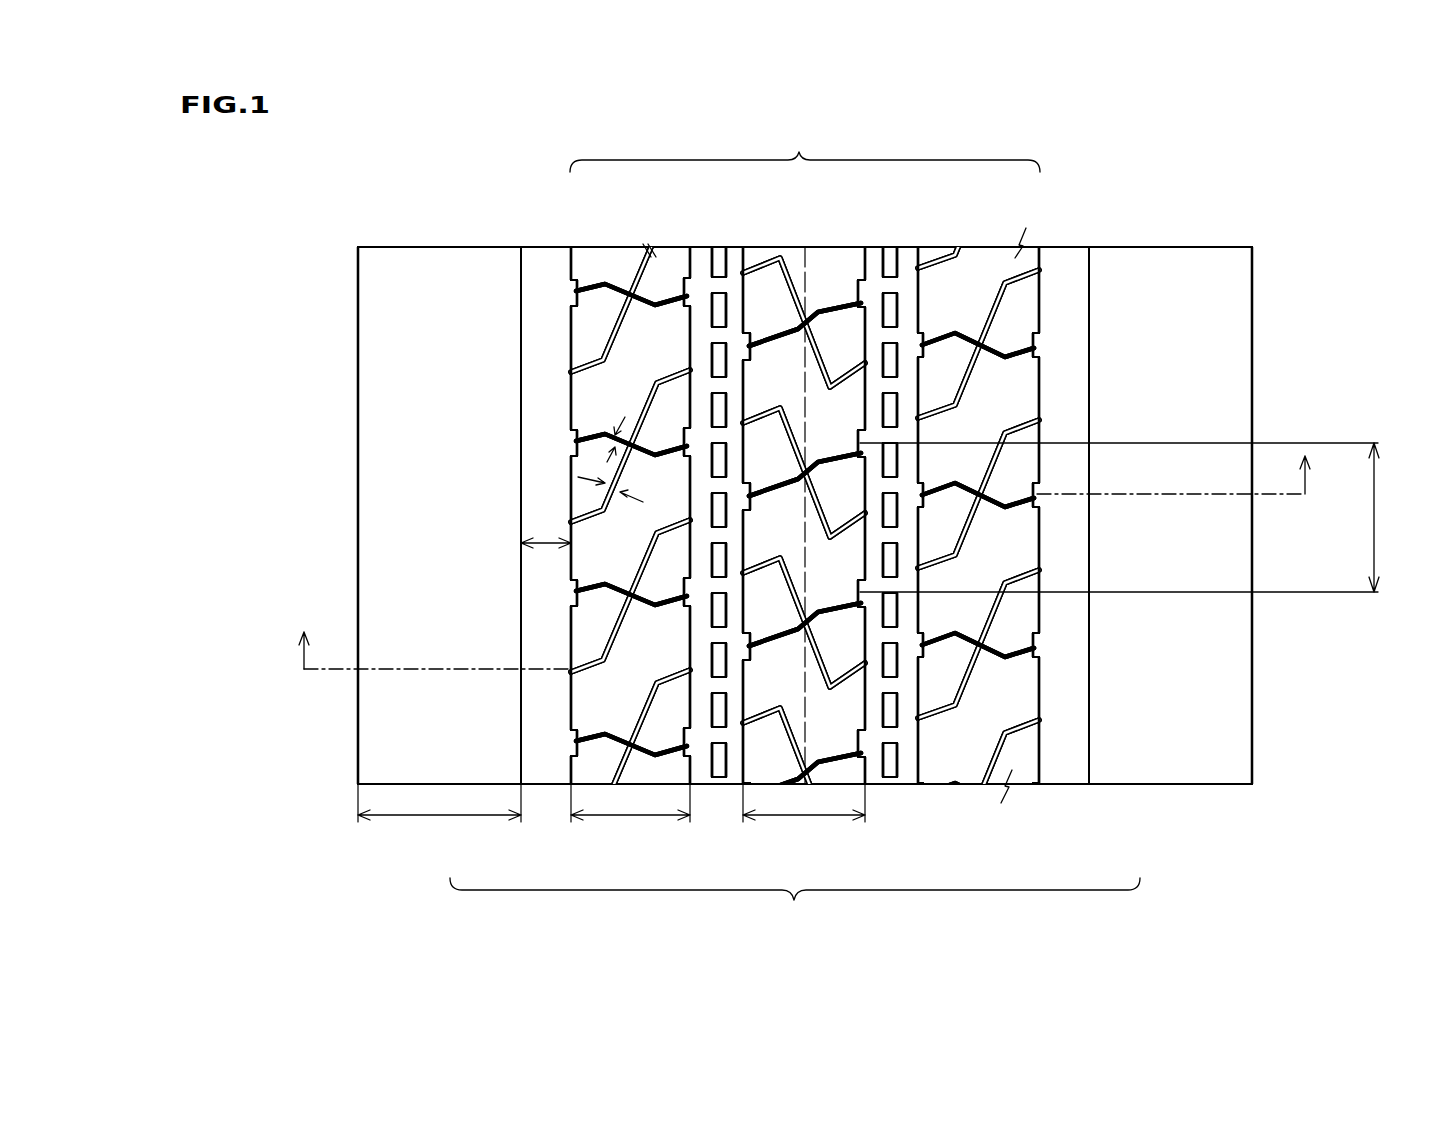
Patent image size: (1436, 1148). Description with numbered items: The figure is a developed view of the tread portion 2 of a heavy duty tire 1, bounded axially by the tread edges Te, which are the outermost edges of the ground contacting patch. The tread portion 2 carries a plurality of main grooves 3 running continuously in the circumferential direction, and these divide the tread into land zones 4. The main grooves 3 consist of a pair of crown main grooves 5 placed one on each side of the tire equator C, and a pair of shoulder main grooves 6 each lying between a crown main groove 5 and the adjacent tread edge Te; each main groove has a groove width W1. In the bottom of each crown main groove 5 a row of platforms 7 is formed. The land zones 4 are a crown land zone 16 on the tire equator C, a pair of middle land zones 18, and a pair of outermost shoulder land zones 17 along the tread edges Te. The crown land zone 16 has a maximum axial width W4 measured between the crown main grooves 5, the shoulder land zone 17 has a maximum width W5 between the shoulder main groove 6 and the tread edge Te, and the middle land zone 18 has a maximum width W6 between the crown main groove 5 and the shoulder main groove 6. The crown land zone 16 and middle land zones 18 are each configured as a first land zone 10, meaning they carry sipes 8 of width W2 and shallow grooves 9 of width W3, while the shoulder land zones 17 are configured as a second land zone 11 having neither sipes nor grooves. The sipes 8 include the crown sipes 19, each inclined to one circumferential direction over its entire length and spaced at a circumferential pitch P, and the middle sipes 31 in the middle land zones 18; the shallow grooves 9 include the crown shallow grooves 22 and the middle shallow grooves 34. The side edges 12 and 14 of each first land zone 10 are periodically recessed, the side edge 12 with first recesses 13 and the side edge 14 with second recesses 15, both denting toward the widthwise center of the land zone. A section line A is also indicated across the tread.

The heavy duty tire 1 is at (1251, 191).
The tread portion 2 is at (1153, 224).
The main grooves 3 is at (805, 148).
The land zones 4 is at (795, 905).
The crown main grooves 5 is at (712, 300).
The shoulder main grooves 6 is at (546, 268).
The platforms 7 is at (630, 282).
The sipes 8 is at (590, 290).
The shallow grooves 9 is at (628, 300).
The first land zone 10 is at (712, 740).
The second land zone 11 is at (480, 765).
The side edge 12 is at (743, 365).
The first recesses 13 is at (527, 280).
The side edge 14 is at (892, 350).
The second recesses 15 is at (688, 285).
The crown land zone 16 is at (804, 510).
The shoulder land zones 17 is at (805, 515).
The middle land zones 18 is at (804, 510).
The crown sipes 19 is at (805, 545).
The crown shallow grooves 22 is at (805, 494).
The middle sipes 31 is at (805, 545).
The middle shallow grooves 34 is at (805, 494).
The tread edges Te is at (358, 283).
The tire equator C is at (803, 477).
The section line A- A is at (815, 557).
The pitch P is at (1129, 517).
The groove width W1 is at (545, 538).
The sipe width W2 is at (571, 370).
The shallow groove width W3 is at (635, 430).
The maximum width of crown land zone W4 is at (804, 803).
The maximum width of shoulder land zone W5 is at (439, 803).
The maximum width of middle land zone W6 is at (630, 803).